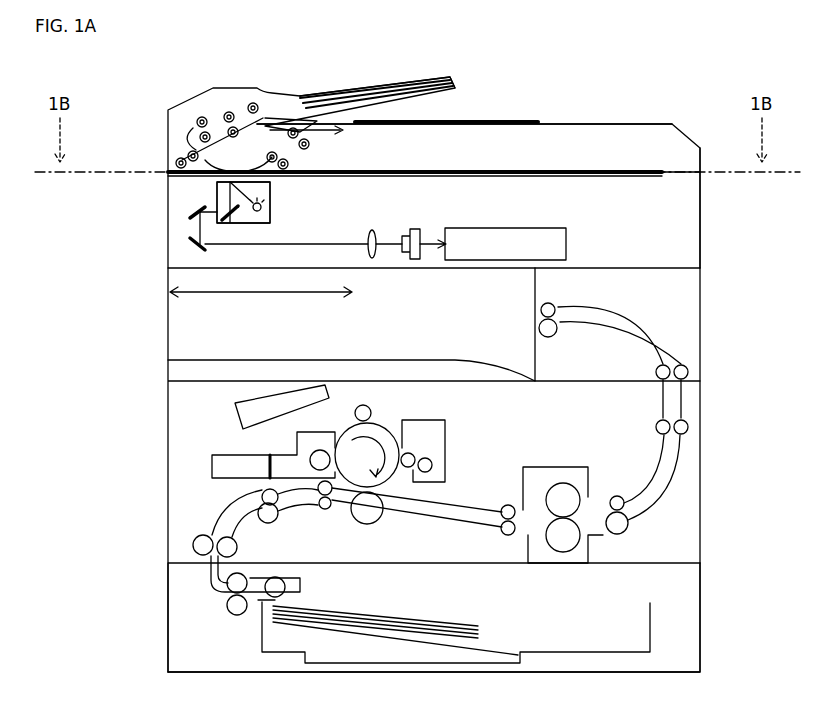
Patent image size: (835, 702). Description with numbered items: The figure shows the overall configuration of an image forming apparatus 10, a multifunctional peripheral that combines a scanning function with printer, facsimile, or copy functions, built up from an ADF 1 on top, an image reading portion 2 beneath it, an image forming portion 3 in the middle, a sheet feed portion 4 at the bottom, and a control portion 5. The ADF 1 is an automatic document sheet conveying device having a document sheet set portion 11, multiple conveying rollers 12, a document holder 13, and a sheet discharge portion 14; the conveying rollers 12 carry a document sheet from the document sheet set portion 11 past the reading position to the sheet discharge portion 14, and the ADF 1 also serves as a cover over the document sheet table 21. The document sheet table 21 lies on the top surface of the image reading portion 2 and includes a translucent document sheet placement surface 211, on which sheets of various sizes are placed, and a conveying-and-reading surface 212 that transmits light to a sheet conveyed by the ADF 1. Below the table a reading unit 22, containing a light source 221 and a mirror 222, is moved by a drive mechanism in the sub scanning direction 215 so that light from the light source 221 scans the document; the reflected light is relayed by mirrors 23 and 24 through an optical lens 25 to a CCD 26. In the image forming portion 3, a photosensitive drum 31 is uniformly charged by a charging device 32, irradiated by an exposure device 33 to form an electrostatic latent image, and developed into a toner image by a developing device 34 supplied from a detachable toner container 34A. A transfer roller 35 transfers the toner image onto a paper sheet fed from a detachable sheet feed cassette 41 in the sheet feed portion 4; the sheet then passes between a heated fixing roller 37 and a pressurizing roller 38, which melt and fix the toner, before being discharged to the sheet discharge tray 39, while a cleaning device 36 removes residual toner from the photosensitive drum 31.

The image forming apparatus 10 is at (126, 96).
The ADF 1 is at (168, 131).
The document sheet set portion 11 is at (300, 96).
The conveying rollers 12 is at (202, 116).
The document holder 13 is at (232, 171).
The sheet discharge portion 14 is at (548, 124).
The image reading portion 2 is at (168, 230).
The document sheet table 21 is at (678, 178).
The document sheet placement surface 211 is at (404, 178).
The conveying-and-reading surface 212 is at (217, 182).
The sub scanning direction 215 is at (262, 298).
The reading unit 22 is at (272, 215).
The light source 221 is at (265, 205).
The mirror 222 is at (234, 218).
The mirror 23 is at (188, 210).
The mirror 24 is at (190, 250).
The optical lens 25 is at (372, 259).
The CCD 26 is at (414, 261).
The control portion 5 is at (478, 228).
The image forming portion 3 is at (184, 408).
The sheet discharge tray 39 is at (468, 359).
The photosensitive drum 31 is at (385, 425).
The charging device 32 is at (355, 413).
The exposure device 33 is at (235, 416).
The developing device 34 is at (297, 446).
The toner container 34A is at (222, 479).
The transfer roller 35 is at (374, 525).
The cleaning device 36 is at (430, 420).
The fixing roller 37 is at (590, 483).
The pressurizing roller 38 is at (555, 548).
The sheet feed portion 4 is at (168, 625).
The sheet feed cassette 41 is at (262, 640).